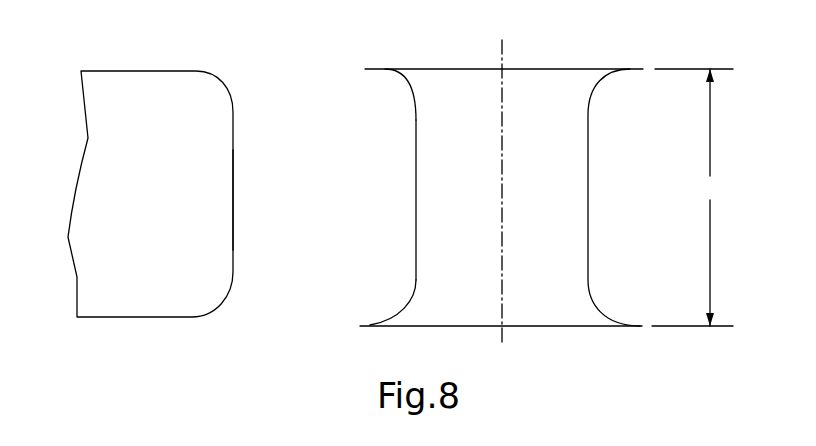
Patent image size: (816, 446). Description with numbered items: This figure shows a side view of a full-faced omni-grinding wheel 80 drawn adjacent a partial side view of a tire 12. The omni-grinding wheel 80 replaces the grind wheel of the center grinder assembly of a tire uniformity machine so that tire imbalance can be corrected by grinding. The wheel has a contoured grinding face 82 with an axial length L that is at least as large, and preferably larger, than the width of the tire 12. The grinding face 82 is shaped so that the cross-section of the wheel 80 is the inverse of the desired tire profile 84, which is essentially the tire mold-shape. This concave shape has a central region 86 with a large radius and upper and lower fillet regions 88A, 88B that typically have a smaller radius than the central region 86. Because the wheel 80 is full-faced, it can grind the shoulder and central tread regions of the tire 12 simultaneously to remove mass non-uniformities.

The tire 12 is at (141, 57).
The omni-grinding wheel 80 is at (471, 169).
The grinding face 82 is at (354, 182).
The desired tire profile 84 is at (233, 198).
The central region 86 is at (416, 197).
The upper fillet region 88A is at (405, 90).
The lower fillet region 88B is at (399, 313).
The axial length L is at (692, 197).